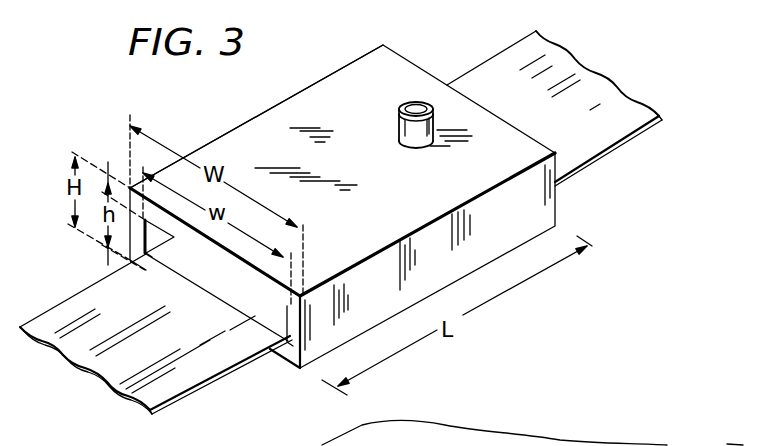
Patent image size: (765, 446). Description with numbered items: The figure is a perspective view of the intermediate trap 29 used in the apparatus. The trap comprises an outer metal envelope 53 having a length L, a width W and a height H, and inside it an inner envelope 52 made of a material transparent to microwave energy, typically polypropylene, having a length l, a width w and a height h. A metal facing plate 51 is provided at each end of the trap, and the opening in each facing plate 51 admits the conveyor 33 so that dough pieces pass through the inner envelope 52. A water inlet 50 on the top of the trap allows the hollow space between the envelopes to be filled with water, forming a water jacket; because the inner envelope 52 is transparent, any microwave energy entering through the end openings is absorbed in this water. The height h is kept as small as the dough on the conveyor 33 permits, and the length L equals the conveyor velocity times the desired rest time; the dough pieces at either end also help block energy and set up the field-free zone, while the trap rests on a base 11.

The base sheet 11 is at (590, 415).
The intermediate trap 29 is at (341, 95).
The conveyor 33 is at (560, 80).
The water inlet 50 is at (398, 127).
The metal facing plate 51 is at (293, 352).
The inner envelope 52 is at (157, 238).
The metal envelope 53 is at (237, 143).